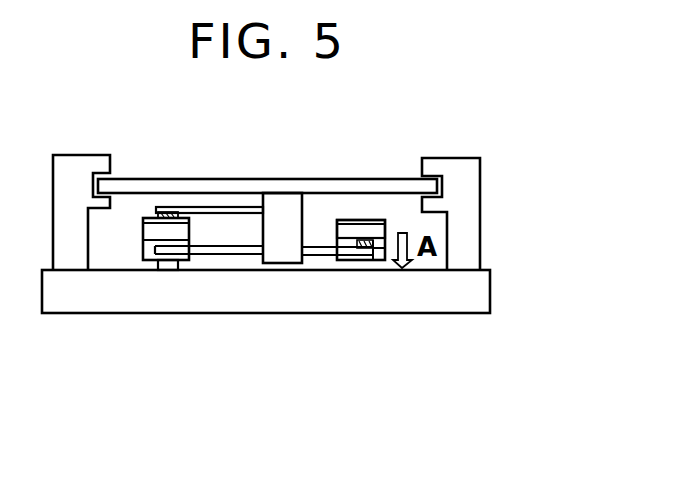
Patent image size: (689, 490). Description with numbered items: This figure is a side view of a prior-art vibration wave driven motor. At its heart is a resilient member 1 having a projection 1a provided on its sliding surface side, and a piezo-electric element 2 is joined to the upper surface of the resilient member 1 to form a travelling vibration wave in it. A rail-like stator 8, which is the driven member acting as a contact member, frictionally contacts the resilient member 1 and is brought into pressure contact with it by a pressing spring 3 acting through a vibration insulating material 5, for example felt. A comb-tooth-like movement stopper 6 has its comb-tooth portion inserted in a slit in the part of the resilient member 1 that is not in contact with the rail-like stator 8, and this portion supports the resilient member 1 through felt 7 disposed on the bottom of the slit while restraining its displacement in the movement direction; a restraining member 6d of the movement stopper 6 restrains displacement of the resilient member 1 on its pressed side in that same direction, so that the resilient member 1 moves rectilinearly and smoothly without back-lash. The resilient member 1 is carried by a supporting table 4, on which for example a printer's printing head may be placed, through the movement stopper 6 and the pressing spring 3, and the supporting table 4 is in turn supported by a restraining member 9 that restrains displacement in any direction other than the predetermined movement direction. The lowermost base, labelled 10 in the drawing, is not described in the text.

The resilient member 1 is at (367, 222).
The projection 1a is at (374, 260).
The piezo-electric element 2 is at (340, 220).
The pressing spring 3 is at (212, 207).
The supporting table 4 is at (256, 180).
The vibration insulating material 5 is at (165, 207).
The movement stopper 6 is at (320, 255).
The restraining member 6d is at (216, 256).
The felt 7 is at (362, 260).
The rail-like stator 8 is at (173, 270).
The restraining member 9 is at (468, 228).
The base 10 is at (465, 293).